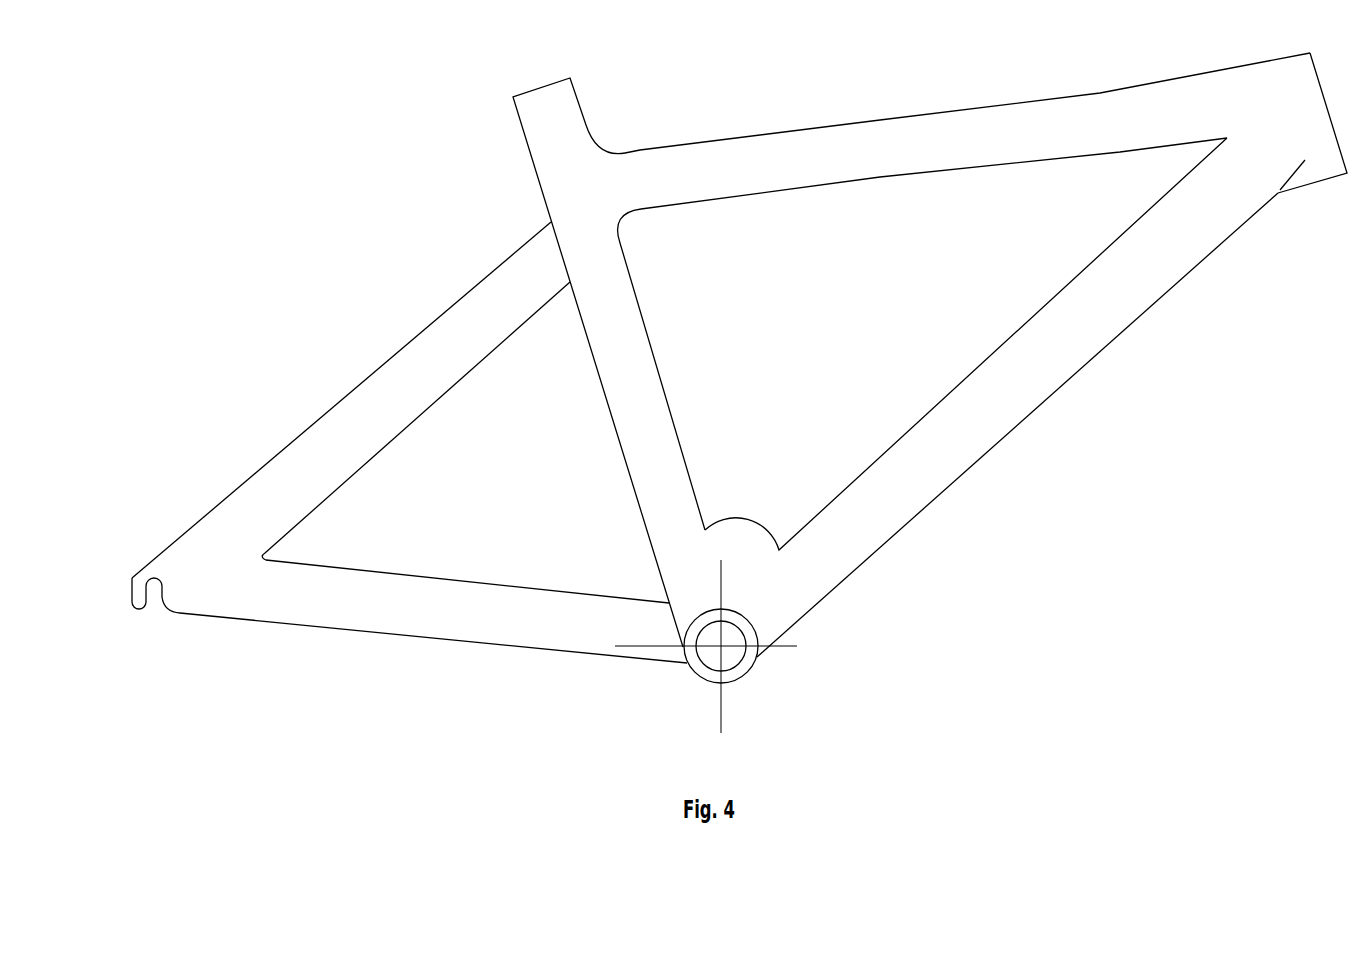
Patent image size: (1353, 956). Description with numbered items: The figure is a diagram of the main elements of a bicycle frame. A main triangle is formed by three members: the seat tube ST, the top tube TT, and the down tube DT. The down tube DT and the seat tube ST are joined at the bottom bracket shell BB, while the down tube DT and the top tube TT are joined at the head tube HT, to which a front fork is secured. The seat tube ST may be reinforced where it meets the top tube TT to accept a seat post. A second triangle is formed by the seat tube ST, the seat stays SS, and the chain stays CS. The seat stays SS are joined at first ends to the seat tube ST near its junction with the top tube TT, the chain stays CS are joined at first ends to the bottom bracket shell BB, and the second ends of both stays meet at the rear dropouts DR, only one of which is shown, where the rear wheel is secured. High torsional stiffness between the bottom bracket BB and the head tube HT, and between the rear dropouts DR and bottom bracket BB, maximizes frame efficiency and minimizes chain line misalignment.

The top tube TT is at (773, 165).
The down tube DT is at (1015, 373).
The head tube HT is at (1312, 188).
The seat tube ST is at (623, 367).
The seat stays SS is at (412, 378).
The chain stays CS is at (437, 605).
The rear dropouts DR is at (137, 582).
The bottom bracket shell BB is at (725, 649).